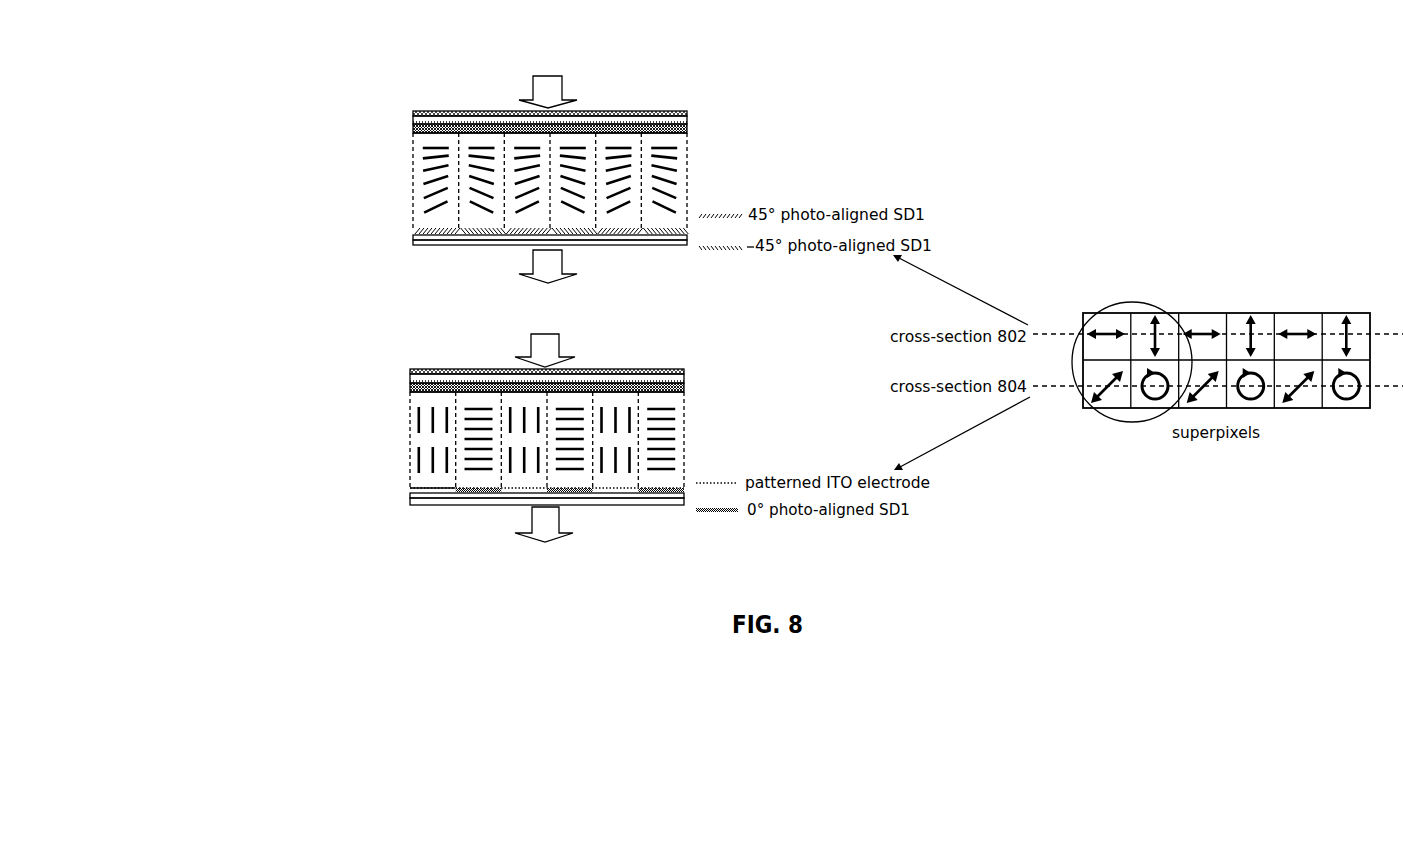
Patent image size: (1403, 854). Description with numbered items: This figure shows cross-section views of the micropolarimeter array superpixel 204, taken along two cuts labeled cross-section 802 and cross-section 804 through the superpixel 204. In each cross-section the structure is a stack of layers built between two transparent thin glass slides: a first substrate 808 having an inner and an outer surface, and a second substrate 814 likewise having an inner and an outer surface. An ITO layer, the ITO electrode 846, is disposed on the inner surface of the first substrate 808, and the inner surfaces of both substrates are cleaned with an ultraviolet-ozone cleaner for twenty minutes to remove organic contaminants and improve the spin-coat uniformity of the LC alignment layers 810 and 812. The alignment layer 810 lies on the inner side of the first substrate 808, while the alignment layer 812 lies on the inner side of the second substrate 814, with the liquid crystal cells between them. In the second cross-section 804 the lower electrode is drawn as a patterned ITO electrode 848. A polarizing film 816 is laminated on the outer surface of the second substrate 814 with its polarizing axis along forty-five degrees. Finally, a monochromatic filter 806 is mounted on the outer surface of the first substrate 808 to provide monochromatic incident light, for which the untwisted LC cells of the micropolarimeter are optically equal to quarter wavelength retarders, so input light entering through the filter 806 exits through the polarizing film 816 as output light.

The cross-section 802 is at (550, 163).
The cross-section 804 is at (579, 434).
The monochromatic filter 806 is at (413, 113).
The first substrate 808 is at (413, 119).
The ITO electrode 846 is at (413, 126).
The LC alignment layer 810 is at (413, 132).
The LC alignment layer 812 is at (677, 234).
The second substrate 814 is at (413, 237).
The polarizing film 816 is at (413, 243).
The patterned ITO electrode 848 is at (432, 487).
The superpixel 204 is at (1138, 293).